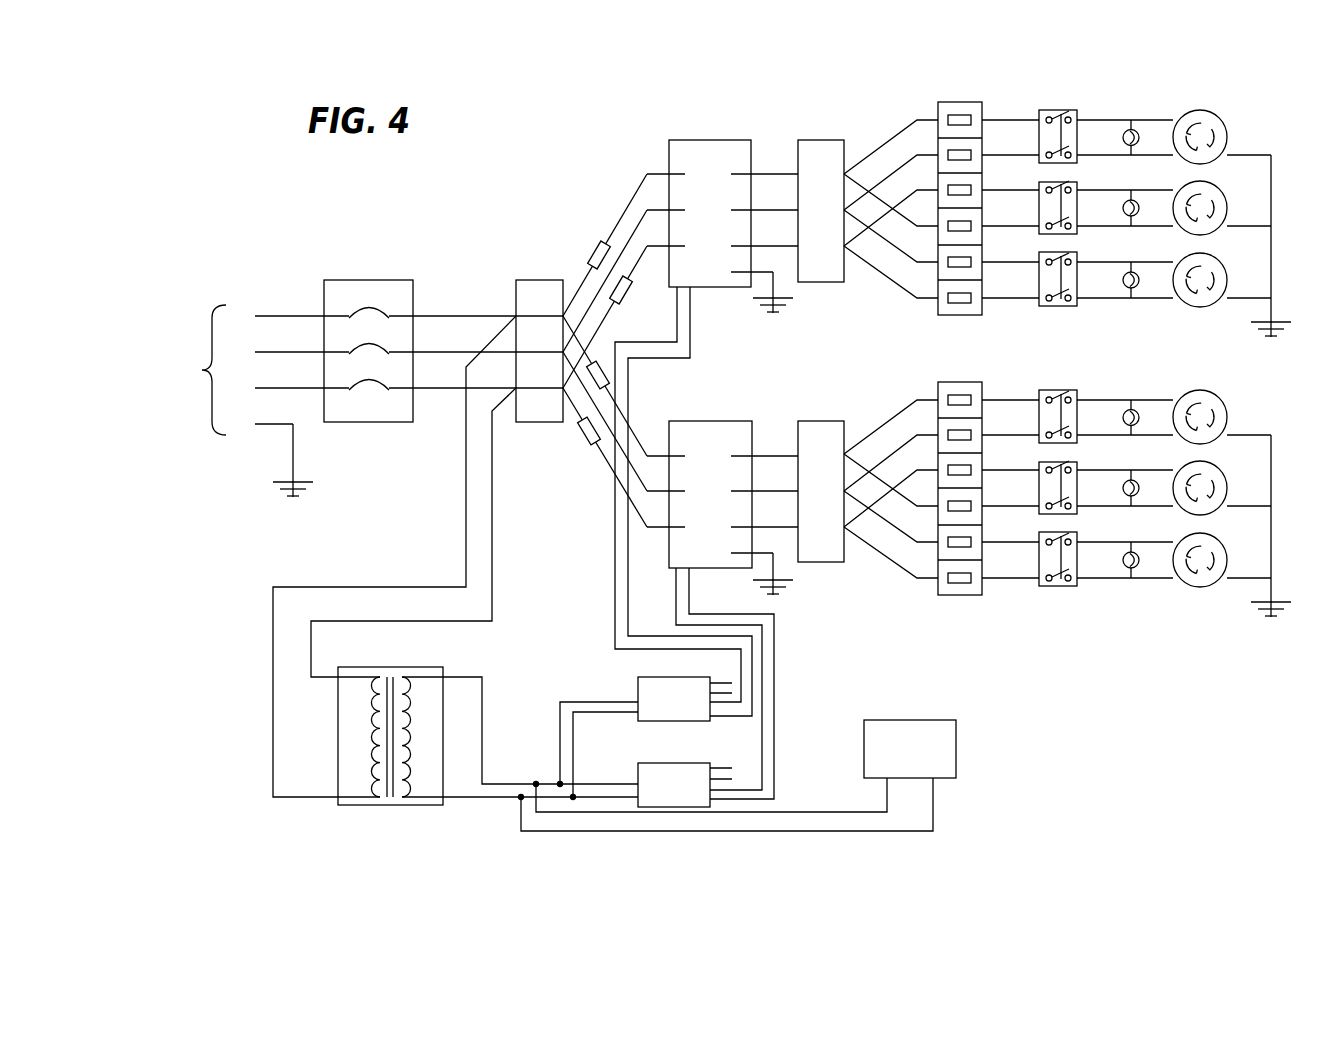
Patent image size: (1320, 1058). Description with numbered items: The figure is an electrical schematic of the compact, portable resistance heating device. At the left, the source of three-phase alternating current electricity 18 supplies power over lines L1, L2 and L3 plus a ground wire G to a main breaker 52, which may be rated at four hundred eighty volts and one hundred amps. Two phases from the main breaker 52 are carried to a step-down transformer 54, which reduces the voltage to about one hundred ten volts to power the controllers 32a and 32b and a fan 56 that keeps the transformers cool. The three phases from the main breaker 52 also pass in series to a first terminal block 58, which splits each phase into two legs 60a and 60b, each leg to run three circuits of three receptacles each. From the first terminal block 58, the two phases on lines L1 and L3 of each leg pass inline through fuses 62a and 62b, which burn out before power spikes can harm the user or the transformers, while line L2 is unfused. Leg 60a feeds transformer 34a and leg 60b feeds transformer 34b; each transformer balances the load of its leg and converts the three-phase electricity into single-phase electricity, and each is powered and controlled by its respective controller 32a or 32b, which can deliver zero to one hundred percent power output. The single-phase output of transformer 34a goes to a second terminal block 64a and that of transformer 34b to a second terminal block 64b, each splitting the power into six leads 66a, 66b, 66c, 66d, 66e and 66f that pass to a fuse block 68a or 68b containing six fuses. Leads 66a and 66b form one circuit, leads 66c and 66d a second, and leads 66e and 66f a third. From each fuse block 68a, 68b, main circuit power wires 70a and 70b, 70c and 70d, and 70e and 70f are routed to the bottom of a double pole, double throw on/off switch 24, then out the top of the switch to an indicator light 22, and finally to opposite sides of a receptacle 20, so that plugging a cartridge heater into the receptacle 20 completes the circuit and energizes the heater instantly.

The source of three-phase alternating current electricity 18 is at (206, 400).
The receptacle 20 is at (1212, 110).
The indicator light 22 is at (1128, 128).
The on/off switch 24 is at (1057, 110).
The controller 32a is at (638, 690).
The controller 32b is at (655, 763).
The transformer 34a is at (712, 140).
The transformer 34b is at (700, 421).
The main breaker 52 is at (348, 280).
The step-down transformer 54 is at (358, 805).
The fan 56 is at (882, 720).
The first terminal block 58 is at (523, 280).
The leg 60a is at (643, 172).
The leg 60b is at (565, 502).
The fuse 62a is at (596, 249).
The fuse 62b is at (622, 280).
The second terminal block 64a is at (815, 140).
The second terminal block 64b is at (815, 421).
The lead 66a is at (895, 135).
The lead 66b is at (883, 180).
The lead 66c is at (907, 190).
The lead 66d is at (905, 222).
The lead 66e is at (880, 262).
The lead 66f is at (897, 280).
The fuse block 68a is at (968, 102).
The fuse block 68b is at (968, 382).
The main circuit power wire 70a is at (1010, 248).
The main circuit power wire 70b is at (1010, 283).
The main circuit power wire 70c is at (1010, 318).
The main circuit power wire 70d is at (1010, 354).
The main circuit power wire 70e is at (1010, 390).
The main circuit power wire 70f is at (1010, 426).